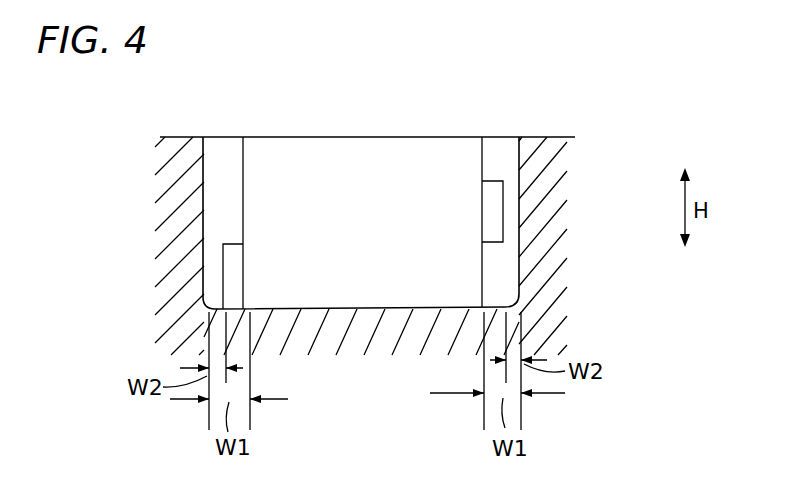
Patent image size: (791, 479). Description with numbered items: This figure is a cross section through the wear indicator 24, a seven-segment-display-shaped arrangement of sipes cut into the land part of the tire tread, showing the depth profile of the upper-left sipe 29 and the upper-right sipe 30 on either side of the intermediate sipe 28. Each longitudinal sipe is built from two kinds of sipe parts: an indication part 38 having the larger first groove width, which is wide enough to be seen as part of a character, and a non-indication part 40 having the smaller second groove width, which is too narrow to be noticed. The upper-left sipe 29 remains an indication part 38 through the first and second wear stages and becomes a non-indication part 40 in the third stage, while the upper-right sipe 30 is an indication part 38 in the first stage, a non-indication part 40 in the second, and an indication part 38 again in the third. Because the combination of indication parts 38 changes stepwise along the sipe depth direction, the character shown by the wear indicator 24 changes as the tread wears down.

The wear indicator 24 is at (383, 134).
The intermediate sipe 28 is at (421, 172).
The upper-left sipe 29 is at (222, 140).
The upper-right sipe 30 is at (499, 145).
The indication part 38 is at (228, 212).
The non-indication part 40 is at (215, 278).